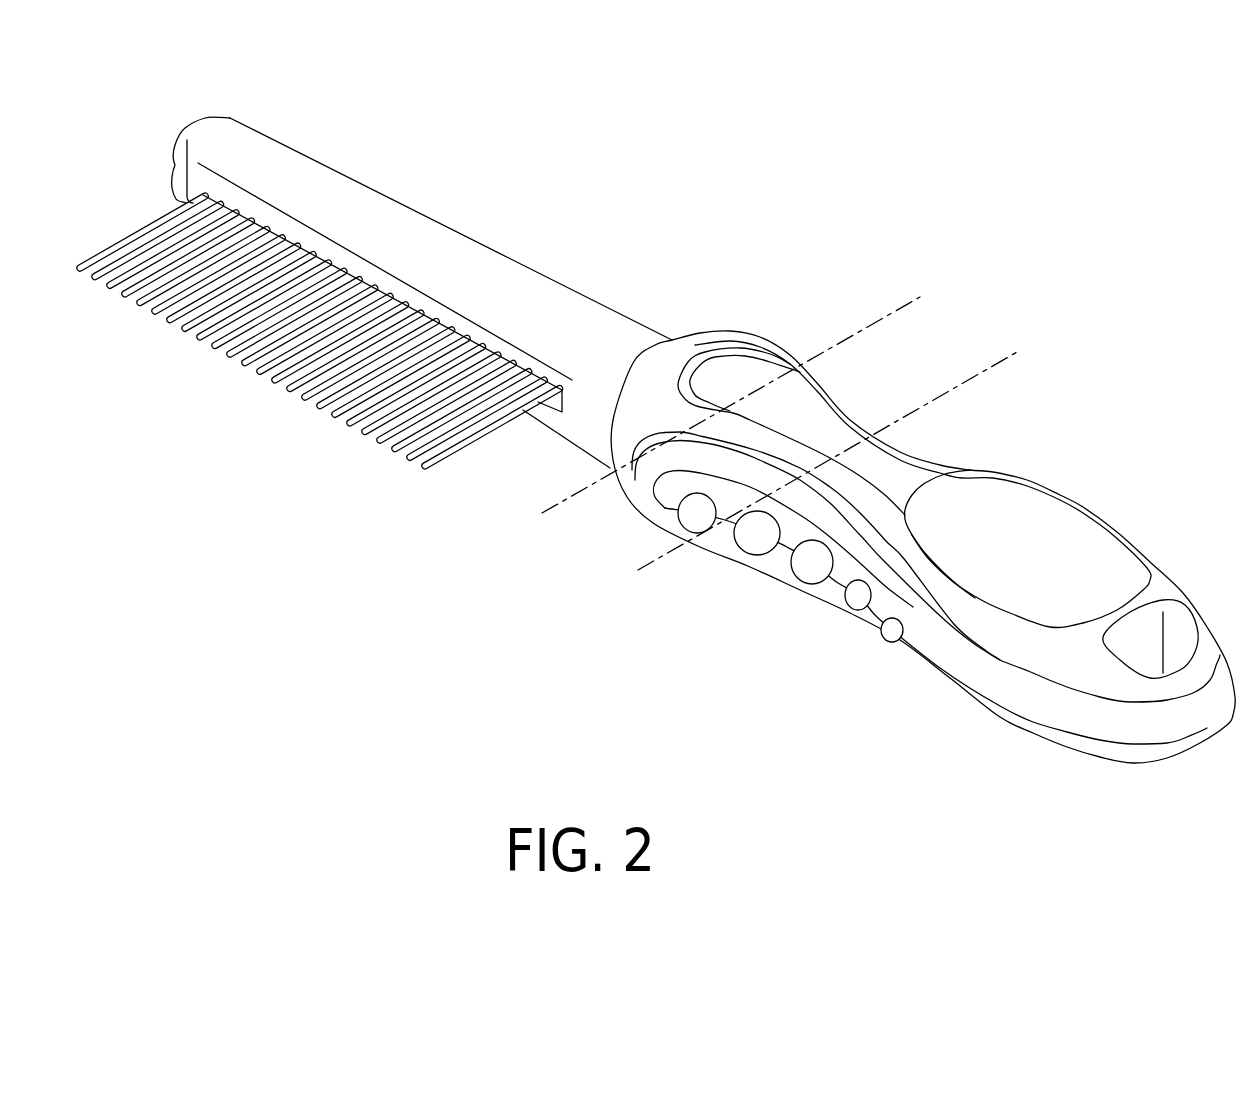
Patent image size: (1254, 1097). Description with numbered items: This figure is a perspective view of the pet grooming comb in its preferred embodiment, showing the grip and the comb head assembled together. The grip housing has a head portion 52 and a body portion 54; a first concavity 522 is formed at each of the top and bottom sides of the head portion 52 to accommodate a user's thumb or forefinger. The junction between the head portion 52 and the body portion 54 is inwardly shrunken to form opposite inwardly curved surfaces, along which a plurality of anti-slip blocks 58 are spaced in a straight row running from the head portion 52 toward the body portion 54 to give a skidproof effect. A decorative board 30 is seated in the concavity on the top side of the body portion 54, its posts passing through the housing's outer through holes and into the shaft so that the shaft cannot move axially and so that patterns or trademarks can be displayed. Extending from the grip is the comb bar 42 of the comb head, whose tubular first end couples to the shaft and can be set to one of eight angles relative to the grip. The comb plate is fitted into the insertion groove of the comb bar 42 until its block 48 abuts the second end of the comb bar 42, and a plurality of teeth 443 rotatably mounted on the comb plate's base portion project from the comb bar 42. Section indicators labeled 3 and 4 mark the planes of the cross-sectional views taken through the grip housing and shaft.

The decorative board 30 is at (1128, 525).
The comb bar 42 is at (372, 222).
The teeth 443 is at (260, 372).
The block 48 is at (205, 135).
The head portion 52 is at (663, 365).
The first concavity 522 is at (730, 365).
The body portion 54 is at (1058, 660).
The anti-slip blocks 58 is at (812, 575).
The section line 3- 3 is at (920, 330).
The section line 4- 4 is at (1017, 387).